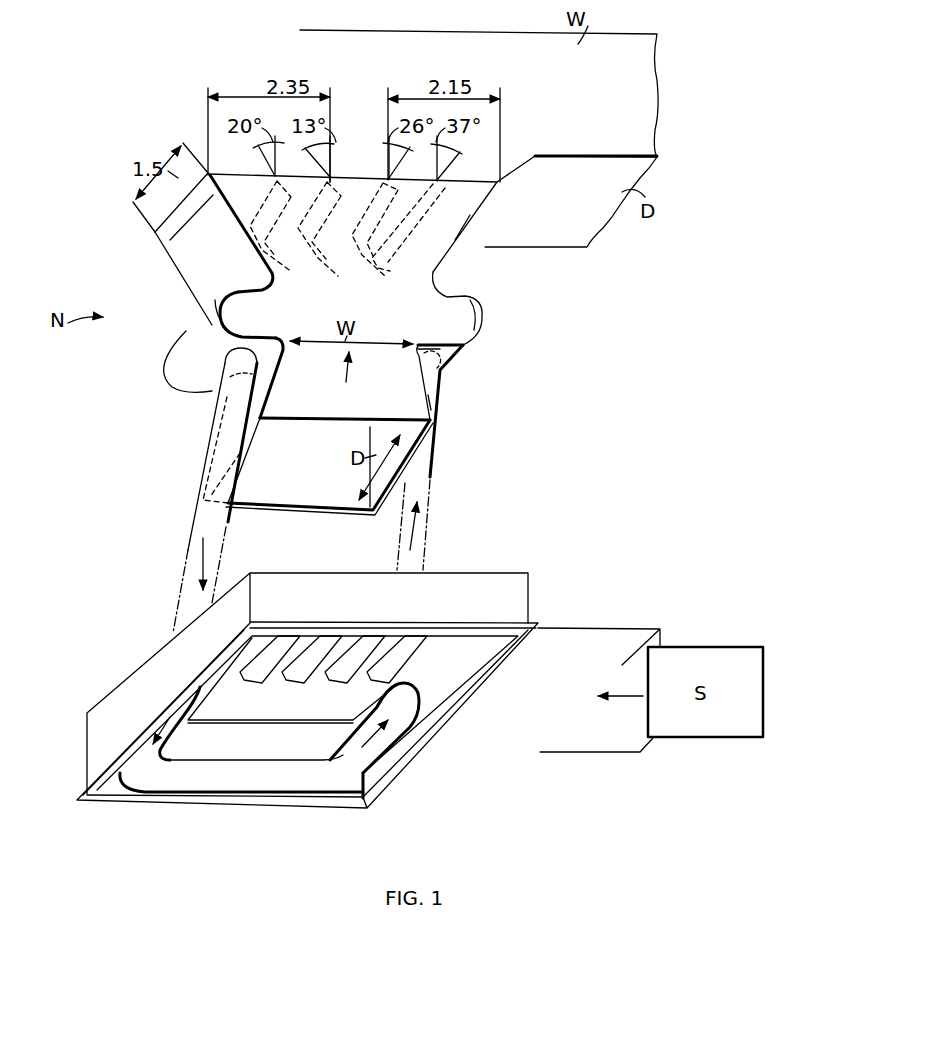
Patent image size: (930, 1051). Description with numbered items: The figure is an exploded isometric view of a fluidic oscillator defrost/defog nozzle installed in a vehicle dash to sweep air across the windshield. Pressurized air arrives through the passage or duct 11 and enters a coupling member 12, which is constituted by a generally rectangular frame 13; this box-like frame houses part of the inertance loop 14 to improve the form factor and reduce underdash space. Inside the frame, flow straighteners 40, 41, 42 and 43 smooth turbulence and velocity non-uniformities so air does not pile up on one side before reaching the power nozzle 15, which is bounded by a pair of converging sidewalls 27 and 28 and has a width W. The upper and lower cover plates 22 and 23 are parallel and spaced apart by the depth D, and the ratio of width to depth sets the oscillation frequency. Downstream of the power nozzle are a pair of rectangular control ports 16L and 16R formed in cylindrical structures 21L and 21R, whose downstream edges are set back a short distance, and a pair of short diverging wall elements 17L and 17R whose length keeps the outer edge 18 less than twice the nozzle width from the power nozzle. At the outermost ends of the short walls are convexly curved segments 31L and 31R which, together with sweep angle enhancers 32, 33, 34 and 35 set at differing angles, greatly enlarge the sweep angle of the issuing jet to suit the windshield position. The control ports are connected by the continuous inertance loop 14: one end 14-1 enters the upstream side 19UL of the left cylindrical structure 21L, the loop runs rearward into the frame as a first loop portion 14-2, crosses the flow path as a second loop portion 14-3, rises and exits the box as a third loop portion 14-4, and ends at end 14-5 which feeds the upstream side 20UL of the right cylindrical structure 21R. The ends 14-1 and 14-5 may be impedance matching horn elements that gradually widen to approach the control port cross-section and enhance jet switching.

The passage or duct 11 is at (586, 632).
The coupling member 12 is at (518, 602).
The rectangular frame 13 is at (170, 672).
The inertance loop 14 is at (196, 536).
The inertance loop end 14-1 is at (227, 372).
The first loop portion 14-2 is at (147, 740).
The second loop portion 14-3 is at (235, 778).
The third loop portion 14-4 is at (402, 723).
The inertance loop end 14-5 is at (438, 364).
The power nozzle 15 is at (347, 379).
The left control port 16L is at (260, 312).
The right control port 16R is at (430, 313).
The left short diverging wall element 17L is at (188, 252).
The right short diverging wall element 17R is at (458, 236).
The outer edge 18 is at (357, 178).
The upstream side of left cylindrical structure 19UL is at (225, 394).
The upstream side of right cylindrical structure 20UL is at (442, 353).
The left cylindrical structure 21L is at (232, 297).
The right cylindrical structure 21R is at (461, 302).
The upper cover plate 22 is at (330, 513).
The lower cover plate 23 is at (308, 426).
The converging sidewall 27 is at (423, 400).
The converging sidewall 28 is at (272, 390).
The left convexly curved segment 31L is at (162, 239).
The right convexly curved segment 31R is at (482, 186).
The sweep angle enhancer 32 is at (241, 233).
The sweep angle enhancer 33 is at (285, 238).
The sweep angle enhancer 34 is at (333, 238).
The sweep angle enhancer 35 is at (382, 239).
The flow straightener 40 is at (280, 642).
The flow straightener 41 is at (314, 642).
The flow straightener 42 is at (354, 644).
The flow straightener 43 is at (390, 646).